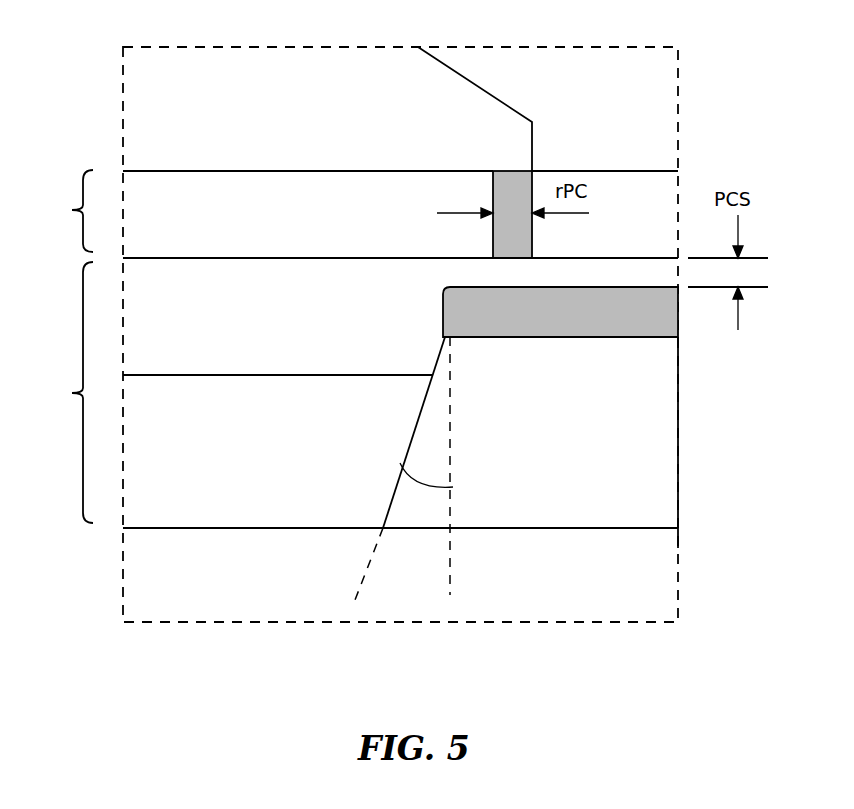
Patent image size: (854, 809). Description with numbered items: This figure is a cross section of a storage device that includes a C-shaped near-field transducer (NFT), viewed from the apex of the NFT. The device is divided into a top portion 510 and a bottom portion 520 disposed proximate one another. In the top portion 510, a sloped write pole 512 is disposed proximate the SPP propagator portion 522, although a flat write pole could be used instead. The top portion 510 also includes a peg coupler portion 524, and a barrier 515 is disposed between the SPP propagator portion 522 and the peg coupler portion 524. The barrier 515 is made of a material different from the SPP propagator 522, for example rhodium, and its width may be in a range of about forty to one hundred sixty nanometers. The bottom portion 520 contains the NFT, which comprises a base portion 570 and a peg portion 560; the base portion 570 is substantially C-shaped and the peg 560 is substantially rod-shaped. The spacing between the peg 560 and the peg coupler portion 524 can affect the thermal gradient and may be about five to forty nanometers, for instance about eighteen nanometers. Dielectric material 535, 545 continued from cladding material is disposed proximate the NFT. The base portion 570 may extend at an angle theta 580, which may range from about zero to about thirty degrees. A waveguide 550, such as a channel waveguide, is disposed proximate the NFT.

The top portion 510 is at (60, 215).
The write pole 512 is at (555, 57).
The barrier 515 is at (510, 178).
The bottom portion 520 is at (65, 393).
The SPP propagator portion 522 is at (290, 176).
The peg coupler portion 524 is at (640, 179).
The dielectric material 535 is at (267, 262).
The dielectric material 545 is at (258, 380).
The waveguide 550 is at (298, 535).
The peg portion 560 is at (472, 300).
The base portion 570 is at (664, 428).
The angle 580 is at (452, 490).